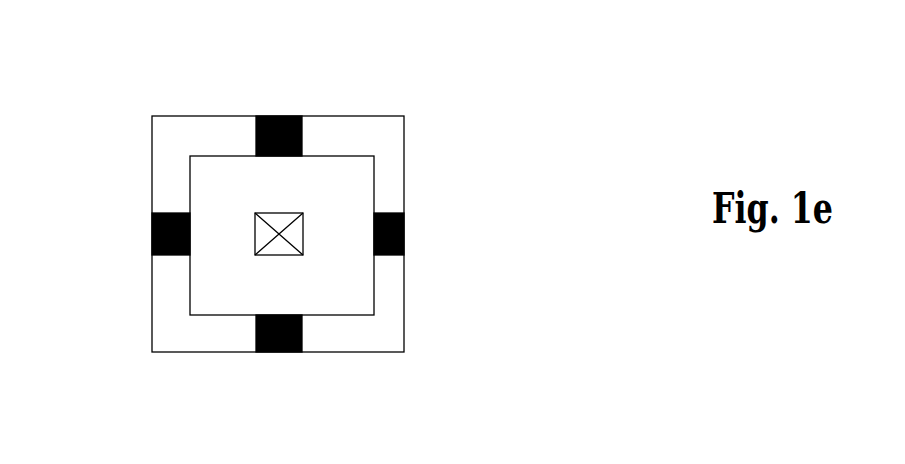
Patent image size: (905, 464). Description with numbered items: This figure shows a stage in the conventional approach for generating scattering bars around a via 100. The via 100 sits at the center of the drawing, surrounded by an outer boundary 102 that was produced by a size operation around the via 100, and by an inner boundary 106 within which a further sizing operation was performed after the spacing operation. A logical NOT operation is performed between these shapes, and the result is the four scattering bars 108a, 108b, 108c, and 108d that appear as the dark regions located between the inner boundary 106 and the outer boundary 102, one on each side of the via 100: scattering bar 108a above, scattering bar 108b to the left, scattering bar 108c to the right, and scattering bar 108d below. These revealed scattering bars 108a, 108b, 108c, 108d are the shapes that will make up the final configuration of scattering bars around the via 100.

The via 100 is at (294, 213).
The boundary 102 is at (185, 116).
The inner boundary 106 is at (189, 173).
The scattering bar 108a is at (293, 116).
The scattering bar 108b is at (152, 229).
The scattering bar 108c is at (404, 232).
The scattering bar 108d is at (297, 353).